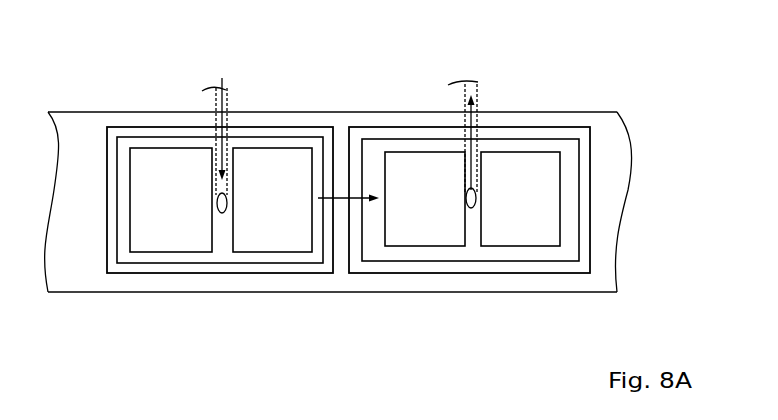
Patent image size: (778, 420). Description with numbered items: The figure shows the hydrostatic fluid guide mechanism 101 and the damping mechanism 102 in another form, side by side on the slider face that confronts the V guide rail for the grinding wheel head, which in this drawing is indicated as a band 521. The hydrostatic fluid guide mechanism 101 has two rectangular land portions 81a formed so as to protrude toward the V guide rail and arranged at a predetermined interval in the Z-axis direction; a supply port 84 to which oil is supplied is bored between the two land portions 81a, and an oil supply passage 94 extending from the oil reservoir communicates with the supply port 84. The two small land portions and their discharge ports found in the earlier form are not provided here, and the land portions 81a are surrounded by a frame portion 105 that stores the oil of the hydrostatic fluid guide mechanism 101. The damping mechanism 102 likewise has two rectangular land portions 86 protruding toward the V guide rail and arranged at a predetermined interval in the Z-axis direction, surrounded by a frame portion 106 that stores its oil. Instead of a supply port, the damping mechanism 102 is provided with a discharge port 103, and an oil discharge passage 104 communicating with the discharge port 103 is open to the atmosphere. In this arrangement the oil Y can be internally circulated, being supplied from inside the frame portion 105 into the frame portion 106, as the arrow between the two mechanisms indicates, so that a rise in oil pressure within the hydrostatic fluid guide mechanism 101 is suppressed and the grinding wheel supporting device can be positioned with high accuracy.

The substrate 521 is at (68, 118).
The hydrostatic fluid guide mechanism 101 is at (220, 185).
The damping mechanism 102 is at (469, 183).
The frame portion 105 is at (305, 268).
The frame portion 106 is at (542, 265).
The land portions 81a is at (155, 158).
The land portions 86 is at (410, 165).
The oil supply passage 94 is at (226, 98).
The oil discharge passage 104 is at (477, 98).
The supply port 84 is at (218, 213).
The discharge port 103 is at (468, 208).
The oil Y is at (335, 199).